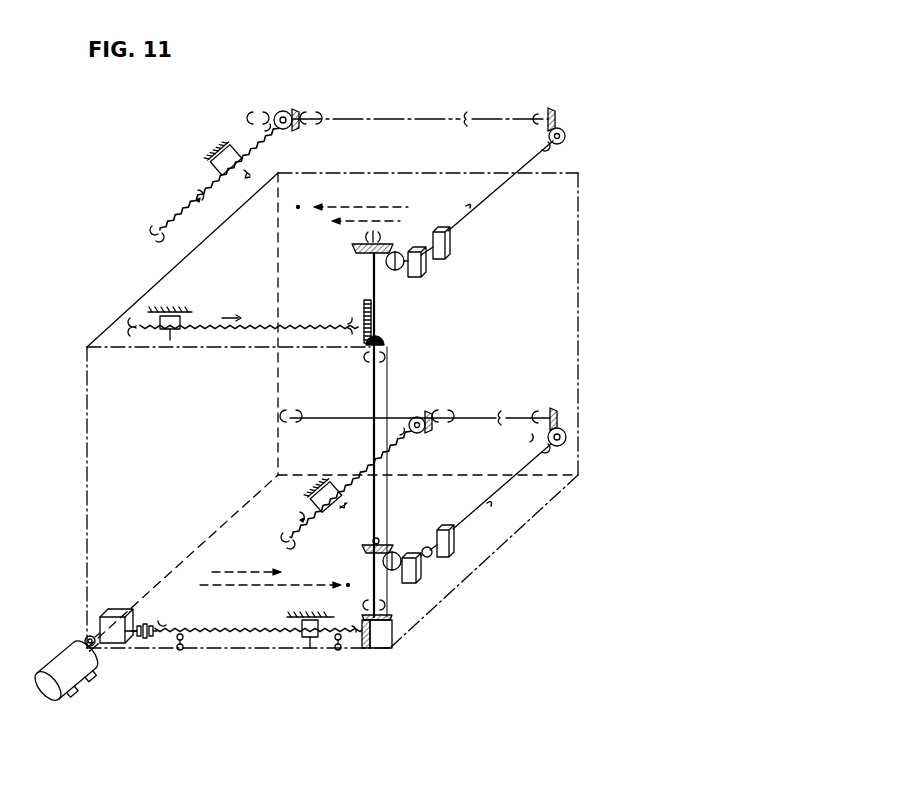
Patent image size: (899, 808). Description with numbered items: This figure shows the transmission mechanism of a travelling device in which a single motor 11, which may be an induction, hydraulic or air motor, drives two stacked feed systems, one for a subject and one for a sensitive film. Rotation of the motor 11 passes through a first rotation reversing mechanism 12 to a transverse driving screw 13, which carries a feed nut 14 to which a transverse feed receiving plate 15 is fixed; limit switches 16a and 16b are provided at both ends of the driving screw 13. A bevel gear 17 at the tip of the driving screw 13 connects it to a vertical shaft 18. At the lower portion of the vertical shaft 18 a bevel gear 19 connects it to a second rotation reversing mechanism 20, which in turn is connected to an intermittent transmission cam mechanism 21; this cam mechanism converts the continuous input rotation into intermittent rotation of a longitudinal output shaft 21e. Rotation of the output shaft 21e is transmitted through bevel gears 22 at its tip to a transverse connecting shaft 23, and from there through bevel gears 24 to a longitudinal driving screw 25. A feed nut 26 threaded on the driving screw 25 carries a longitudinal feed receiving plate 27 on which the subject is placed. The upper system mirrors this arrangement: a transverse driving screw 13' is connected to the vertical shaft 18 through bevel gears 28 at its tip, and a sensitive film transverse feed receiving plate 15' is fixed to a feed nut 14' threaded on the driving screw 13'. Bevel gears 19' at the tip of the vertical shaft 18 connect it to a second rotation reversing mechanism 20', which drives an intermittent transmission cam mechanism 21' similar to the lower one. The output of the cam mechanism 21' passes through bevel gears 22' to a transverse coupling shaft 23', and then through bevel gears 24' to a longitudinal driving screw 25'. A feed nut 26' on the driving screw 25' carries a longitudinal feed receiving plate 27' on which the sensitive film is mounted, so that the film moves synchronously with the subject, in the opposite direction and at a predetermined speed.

The motor 11 is at (56, 668).
The first rotation reversing mechanism 12 is at (111, 637).
The transverse driving screw 13 is at (246, 659).
The transverse driving screw 13' is at (243, 350).
The feed nut 14 is at (306, 655).
The feed nut 14' is at (157, 346).
The transverse feed receiving plate 15 is at (319, 677).
The sensitive film transverse feed receiving plate 15' is at (181, 357).
The limit switch 16a is at (180, 651).
The limit switch 16b is at (338, 651).
The bevel gear 17 is at (394, 622).
The vertical shaft 18 is at (372, 386).
The bevel gear 19 is at (371, 543).
The bevel gears 19' is at (374, 232).
The second rotation reversing mechanism 20 is at (443, 591).
The second rotation reversing mechanism 20' is at (451, 274).
The intermittent transmission cam mechanism 21 is at (477, 566).
The intermittent transmission cam mechanism 21' is at (453, 246).
The longitudinal output shaft 21e is at (500, 490).
The bevel gears 22 is at (580, 420).
The bevel gears 22' is at (584, 119).
The transverse connecting shaft 23 is at (415, 401).
The transverse coupling shaft 23' is at (420, 100).
The bevel gears 24 is at (433, 406).
The bevel gears 24' is at (288, 102).
The longitudinal driving screw 25 is at (366, 490).
The longitudinal driving screw 25' is at (208, 185).
The feed nut 26 is at (366, 497).
The feed nut 26' is at (203, 161).
The longitudinal feed receiving plate 27 is at (262, 489).
The longitudinal feed receiving plate 27' is at (199, 138).
The bevel gears 28 is at (372, 307).